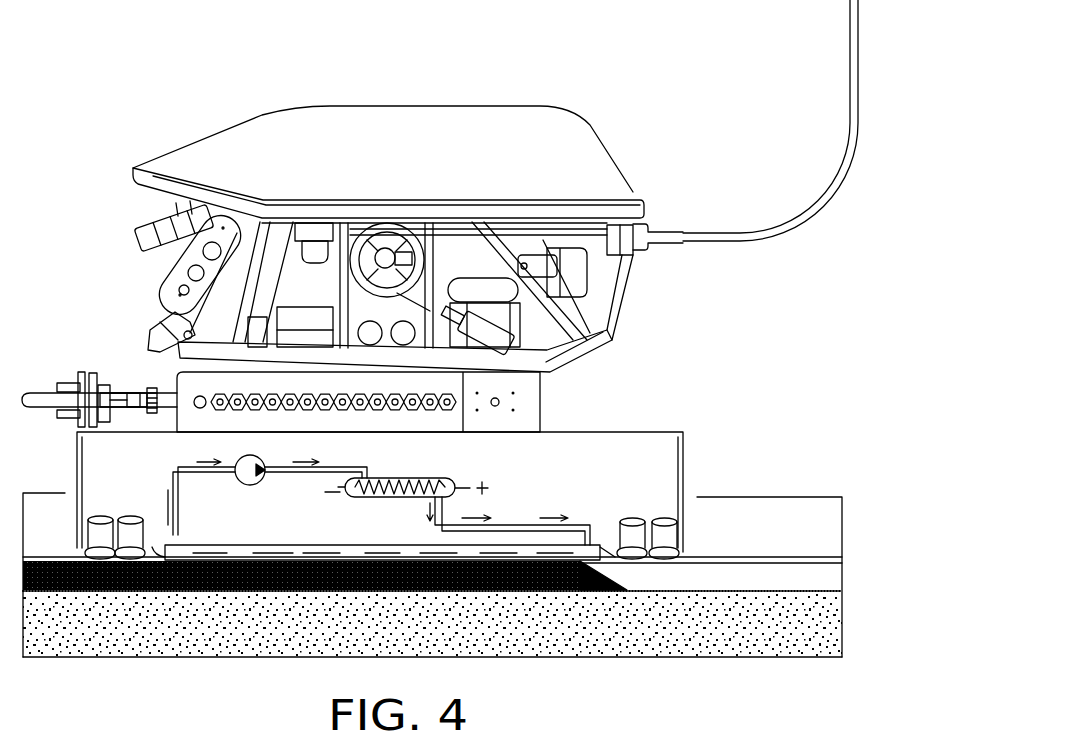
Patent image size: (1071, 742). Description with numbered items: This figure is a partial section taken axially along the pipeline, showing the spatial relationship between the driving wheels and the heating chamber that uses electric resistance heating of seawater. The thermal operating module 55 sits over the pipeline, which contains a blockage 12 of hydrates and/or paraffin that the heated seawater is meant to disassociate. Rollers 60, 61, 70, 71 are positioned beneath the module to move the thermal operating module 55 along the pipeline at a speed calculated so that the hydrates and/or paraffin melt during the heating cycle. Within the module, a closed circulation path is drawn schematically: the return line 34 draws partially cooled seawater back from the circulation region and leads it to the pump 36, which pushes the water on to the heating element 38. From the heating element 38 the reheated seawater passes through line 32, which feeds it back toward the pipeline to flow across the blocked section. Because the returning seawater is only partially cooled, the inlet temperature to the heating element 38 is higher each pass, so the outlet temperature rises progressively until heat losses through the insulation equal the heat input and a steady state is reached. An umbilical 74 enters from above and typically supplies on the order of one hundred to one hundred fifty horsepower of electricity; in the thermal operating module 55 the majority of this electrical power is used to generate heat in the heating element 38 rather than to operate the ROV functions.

The blockage 12 is at (493, 577).
The line 32 is at (513, 525).
The return line 34 is at (177, 515).
The pump 36 is at (257, 464).
The heating element 38 is at (418, 478).
The thermal operating module 55 is at (635, 445).
The roller 60 is at (92, 553).
The roller 61 is at (132, 553).
The roller 70 is at (632, 553).
The roller 71 is at (663, 553).
The umbilical 74 is at (850, 125).